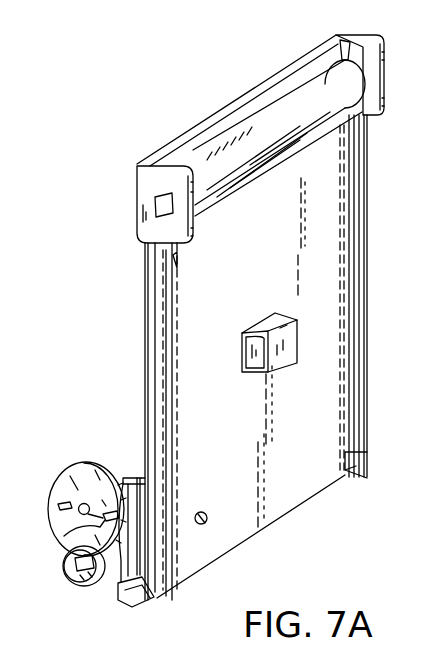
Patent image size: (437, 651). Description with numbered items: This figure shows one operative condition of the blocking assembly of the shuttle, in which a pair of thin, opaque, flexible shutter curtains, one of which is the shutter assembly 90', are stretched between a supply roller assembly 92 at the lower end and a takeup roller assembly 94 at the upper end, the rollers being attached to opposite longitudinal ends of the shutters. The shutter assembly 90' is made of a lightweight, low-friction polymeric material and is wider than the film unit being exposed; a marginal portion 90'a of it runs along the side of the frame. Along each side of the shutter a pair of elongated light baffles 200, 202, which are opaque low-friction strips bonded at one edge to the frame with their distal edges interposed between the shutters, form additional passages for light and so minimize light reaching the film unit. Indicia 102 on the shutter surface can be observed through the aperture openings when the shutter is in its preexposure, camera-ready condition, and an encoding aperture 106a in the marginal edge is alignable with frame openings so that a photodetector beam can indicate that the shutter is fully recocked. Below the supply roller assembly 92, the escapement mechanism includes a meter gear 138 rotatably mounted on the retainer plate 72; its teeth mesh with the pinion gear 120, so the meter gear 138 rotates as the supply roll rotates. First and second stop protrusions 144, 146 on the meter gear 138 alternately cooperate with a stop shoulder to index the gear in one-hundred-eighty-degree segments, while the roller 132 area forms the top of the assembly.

The roller assembly 132 is at (297, 93).
The takeup roller assembly 94 is at (363, 37).
The shutter assembly 90' is at (294, 356).
The frame side rail 90'a is at (133, 421).
The light baffle 200 is at (177, 328).
The light baffle 202 is at (340, 300).
The indicia 102 is at (274, 364).
The encoding aperture 106a is at (202, 512).
The retainer plate 72 is at (133, 480).
The meter gear 138 is at (82, 462).
The first stop protrusion 144 is at (62, 503).
The second stop protrusion 146 is at (64, 536).
The pinion gear 120 is at (77, 579).
The supply roller assembly 92 is at (100, 592).